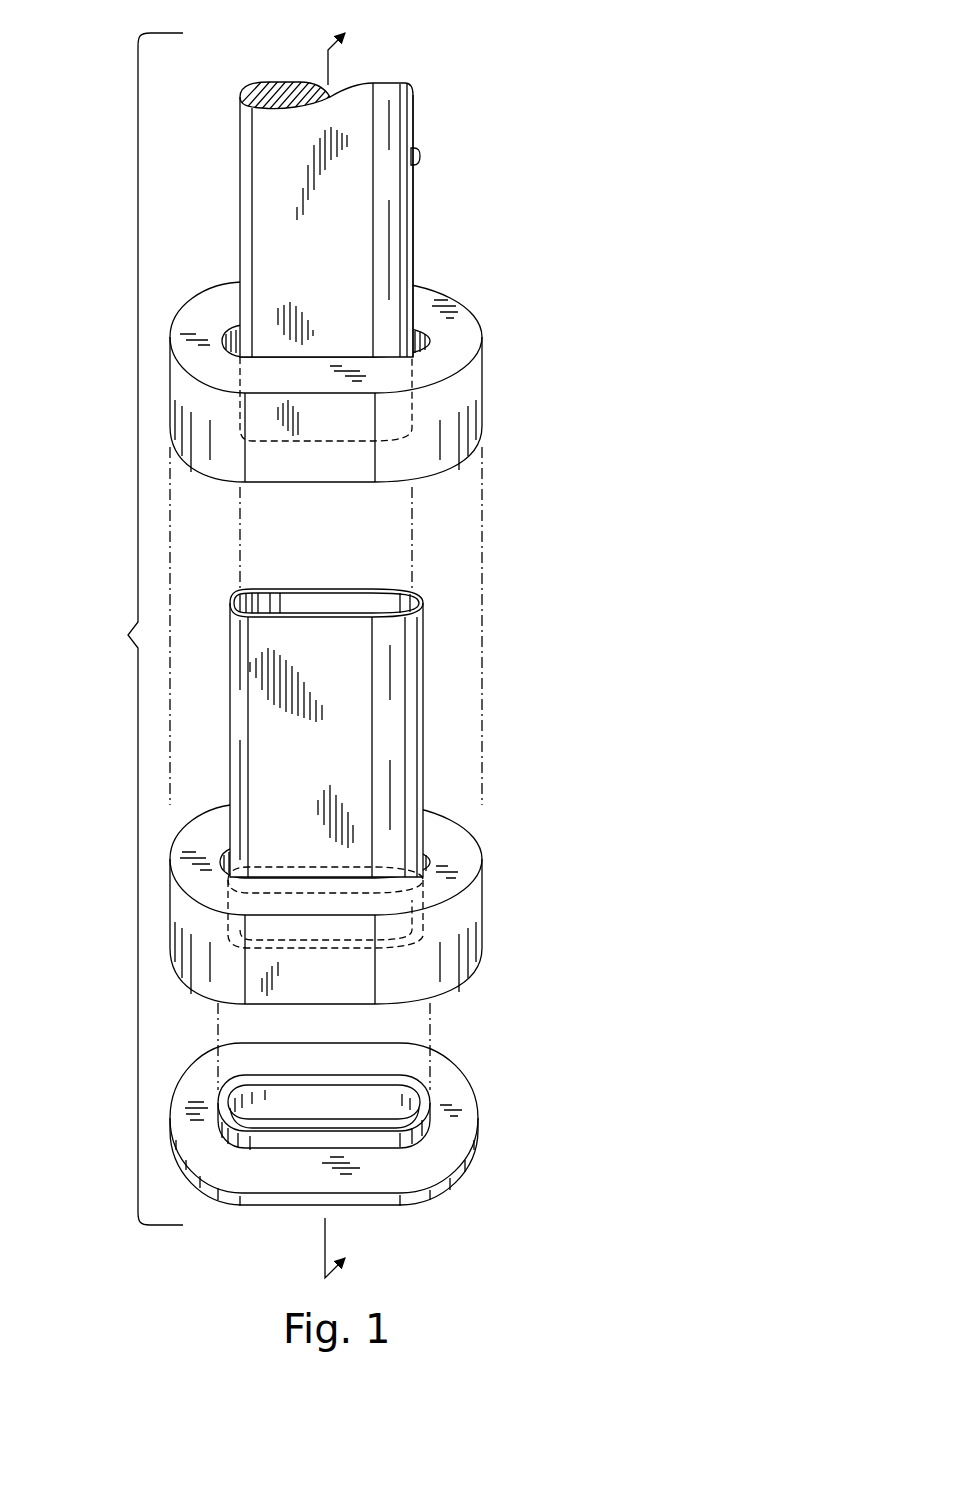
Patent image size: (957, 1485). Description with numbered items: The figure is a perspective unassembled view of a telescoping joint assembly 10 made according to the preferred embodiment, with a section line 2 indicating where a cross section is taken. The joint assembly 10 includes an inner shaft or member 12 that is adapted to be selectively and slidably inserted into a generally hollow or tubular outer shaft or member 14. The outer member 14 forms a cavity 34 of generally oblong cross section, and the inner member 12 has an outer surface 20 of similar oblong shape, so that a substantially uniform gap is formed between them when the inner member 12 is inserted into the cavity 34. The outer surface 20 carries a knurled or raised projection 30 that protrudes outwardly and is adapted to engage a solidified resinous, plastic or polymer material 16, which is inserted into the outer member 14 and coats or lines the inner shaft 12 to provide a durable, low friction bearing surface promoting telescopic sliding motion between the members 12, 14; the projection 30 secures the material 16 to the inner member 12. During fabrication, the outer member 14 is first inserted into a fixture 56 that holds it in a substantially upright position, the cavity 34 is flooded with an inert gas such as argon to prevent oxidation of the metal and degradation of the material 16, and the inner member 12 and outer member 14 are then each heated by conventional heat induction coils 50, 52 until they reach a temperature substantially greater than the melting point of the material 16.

The section line 2- 2 is at (347, 645).
The telescoping joint assembly 10 is at (462, 97).
The inner shaft or member 12 is at (338, 286).
The outer shaft or member 14 is at (333, 762).
The resinous, plastic or polymer material 16 is at (396, 867).
The outer surface 20 is at (414, 225).
The knurled or raised projection 30 is at (420, 156).
The cavity 34 is at (337, 600).
The heat induction coil 50 is at (333, 470).
The heat induction coil 52 is at (333, 985).
The fixture 56 is at (474, 1090).